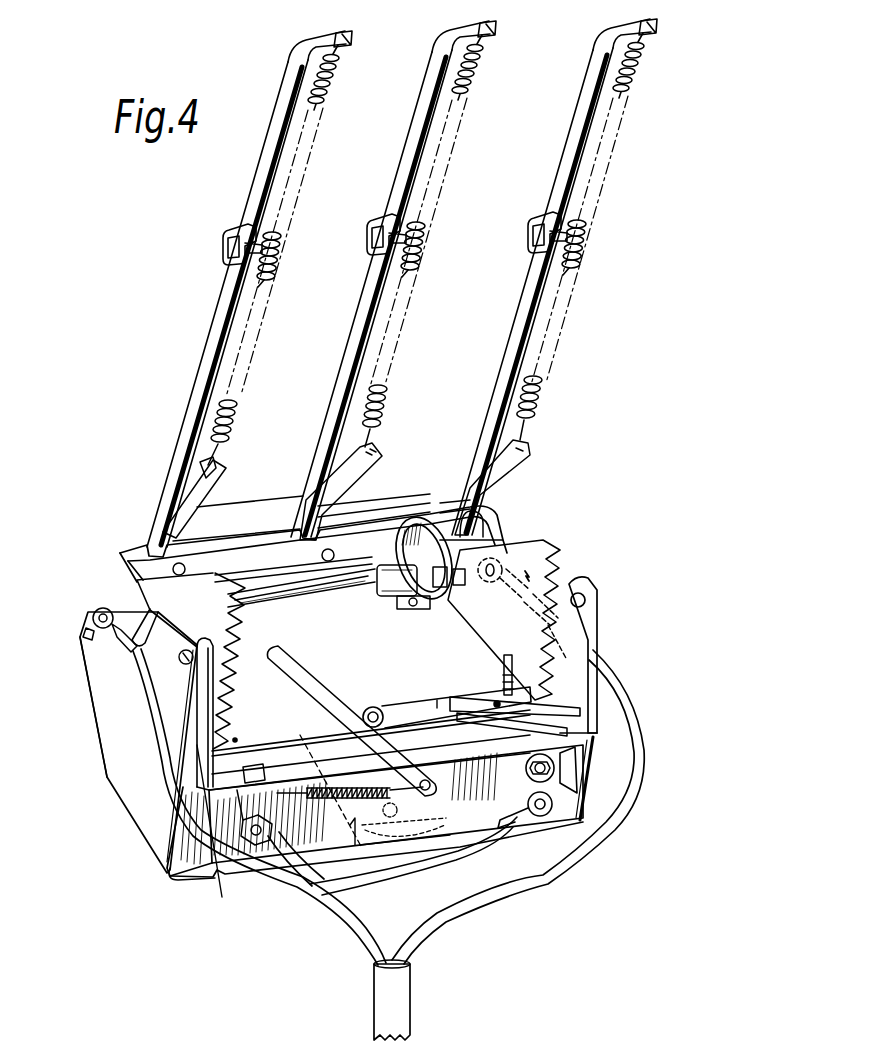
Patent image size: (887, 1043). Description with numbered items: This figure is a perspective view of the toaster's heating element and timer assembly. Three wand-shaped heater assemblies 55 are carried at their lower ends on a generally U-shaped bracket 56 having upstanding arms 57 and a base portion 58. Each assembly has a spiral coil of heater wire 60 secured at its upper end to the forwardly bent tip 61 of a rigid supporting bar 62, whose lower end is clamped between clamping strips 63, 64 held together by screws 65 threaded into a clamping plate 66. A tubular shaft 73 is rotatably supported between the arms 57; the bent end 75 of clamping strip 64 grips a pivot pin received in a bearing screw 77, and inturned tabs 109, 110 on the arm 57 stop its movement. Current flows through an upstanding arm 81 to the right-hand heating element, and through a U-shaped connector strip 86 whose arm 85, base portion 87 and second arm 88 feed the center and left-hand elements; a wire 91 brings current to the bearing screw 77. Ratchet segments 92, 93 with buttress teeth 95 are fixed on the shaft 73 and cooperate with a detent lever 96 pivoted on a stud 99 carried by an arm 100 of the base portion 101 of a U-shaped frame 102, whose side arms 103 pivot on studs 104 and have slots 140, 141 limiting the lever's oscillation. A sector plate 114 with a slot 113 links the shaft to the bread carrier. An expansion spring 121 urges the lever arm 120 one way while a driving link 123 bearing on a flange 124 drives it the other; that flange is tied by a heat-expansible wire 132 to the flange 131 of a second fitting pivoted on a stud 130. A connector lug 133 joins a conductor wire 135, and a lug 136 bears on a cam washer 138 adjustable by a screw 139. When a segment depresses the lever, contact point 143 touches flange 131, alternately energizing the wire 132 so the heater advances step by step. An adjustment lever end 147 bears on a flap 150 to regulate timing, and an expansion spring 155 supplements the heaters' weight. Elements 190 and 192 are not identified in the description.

The heater assemblies 55 is at (327, 194).
The U-shaped bracket 56 is at (122, 829).
The upstanding arms 57 is at (575, 582).
The base portion 58 is at (182, 872).
The heater wire 60 is at (236, 415).
The forwardly bent tip 61 is at (322, 38).
The supporting bar 62 is at (263, 173).
The clamping strip 63 is at (360, 518).
The clamping strip 64 is at (372, 560).
The screws 65 is at (186, 566).
The clamping plate 66 is at (412, 513).
The tubular shaft 73 is at (317, 596).
The end of clamping strip 75 is at (120, 578).
The bearing screw 77 is at (96, 612).
The upstanding arm 81 is at (495, 473).
The arm of connector strip 85 is at (347, 473).
The U-shaped connector strip 86 is at (276, 497).
The base portion of connector strip 87 is at (232, 530).
The second arm of connector strip 88 is at (220, 465).
The wire 91 is at (150, 740).
The ratchet segment 92 is at (235, 626).
The ratchet segment 93 is at (517, 547).
The buttress teeth 95 is at (548, 650).
The detent lever 96 is at (437, 708).
The stud 99 is at (374, 707).
The arm 100 is at (413, 715).
The base portion of frame 101 is at (307, 840).
The U-shaped frame 102 is at (589, 823).
The side arms 103 is at (590, 640).
The studs 104 is at (186, 665).
The inturned tab 109 is at (83, 637).
The inturned tab 110 is at (152, 609).
The slot 113 is at (432, 542).
The sector plate 114 is at (438, 600).
The lever arm 120 is at (443, 818).
The expansion spring 121 is at (335, 835).
The driving link 123 is at (307, 750).
The flange 124 is at (250, 767).
The stud 130 is at (540, 817).
The flange 131 is at (523, 725).
The heat-expansible wire 132 is at (352, 753).
The connector lug 133 is at (227, 877).
The conductor wire 135 is at (357, 922).
The lug 136 is at (578, 765).
The cam washer 138 is at (526, 764).
The screw 139 is at (535, 778).
The slot 140 is at (195, 770).
The slot 141 is at (575, 712).
The contact point 143 is at (494, 704).
The end of adjustment lever 147 is at (281, 660).
The flap 150 is at (367, 840).
The expansion spring 155 is at (503, 677).
The cable loop 190 is at (635, 785).
The rail 192 is at (237, 739).